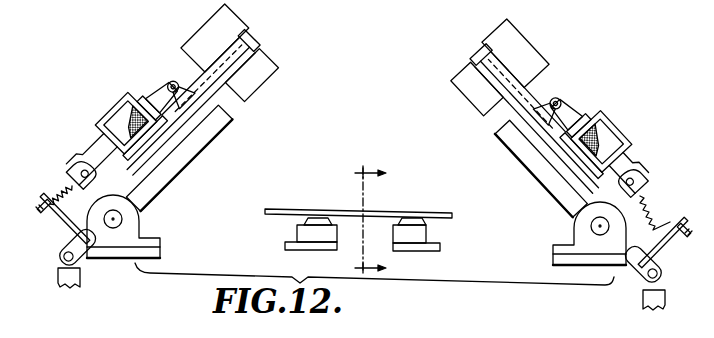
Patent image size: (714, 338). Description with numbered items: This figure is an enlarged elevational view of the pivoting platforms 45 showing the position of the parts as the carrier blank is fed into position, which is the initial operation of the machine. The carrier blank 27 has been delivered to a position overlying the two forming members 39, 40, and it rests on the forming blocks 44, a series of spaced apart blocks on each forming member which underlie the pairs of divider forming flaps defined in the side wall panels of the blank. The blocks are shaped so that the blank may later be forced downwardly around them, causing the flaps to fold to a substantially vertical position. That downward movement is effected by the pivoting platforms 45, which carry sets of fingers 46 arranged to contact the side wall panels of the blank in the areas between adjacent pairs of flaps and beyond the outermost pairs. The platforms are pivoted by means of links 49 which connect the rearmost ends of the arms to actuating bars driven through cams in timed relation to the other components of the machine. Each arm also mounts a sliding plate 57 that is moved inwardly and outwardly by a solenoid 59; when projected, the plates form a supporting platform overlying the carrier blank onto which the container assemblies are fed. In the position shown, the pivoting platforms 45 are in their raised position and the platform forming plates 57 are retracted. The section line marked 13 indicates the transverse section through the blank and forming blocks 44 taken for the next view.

The section line 13- 13 is at (382, 219).
The carrier blank 27 is at (386, 212).
The forming member 39 is at (300, 232).
The forming member 40 is at (430, 236).
The forming blocks 44 is at (398, 220).
The pivoting platforms 45 is at (200, 152).
The fingers 46 is at (267, 78).
The links 49 is at (58, 272).
The sliding plate 57 is at (260, 42).
The solenoid 59 is at (117, 100).